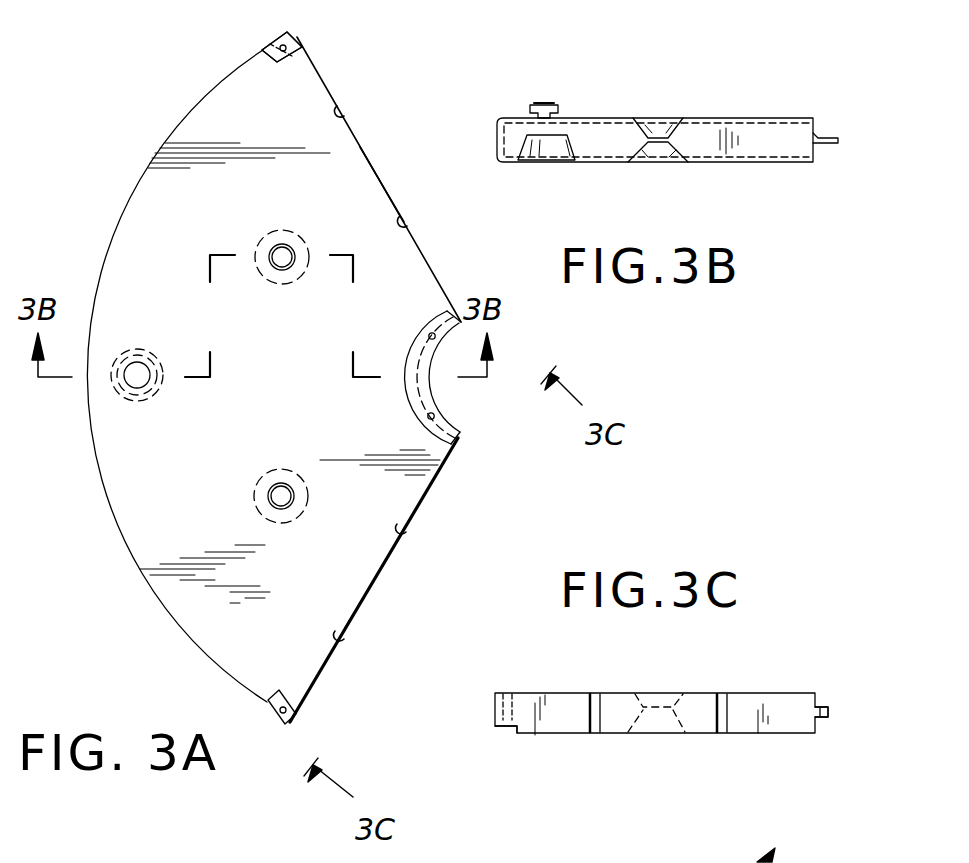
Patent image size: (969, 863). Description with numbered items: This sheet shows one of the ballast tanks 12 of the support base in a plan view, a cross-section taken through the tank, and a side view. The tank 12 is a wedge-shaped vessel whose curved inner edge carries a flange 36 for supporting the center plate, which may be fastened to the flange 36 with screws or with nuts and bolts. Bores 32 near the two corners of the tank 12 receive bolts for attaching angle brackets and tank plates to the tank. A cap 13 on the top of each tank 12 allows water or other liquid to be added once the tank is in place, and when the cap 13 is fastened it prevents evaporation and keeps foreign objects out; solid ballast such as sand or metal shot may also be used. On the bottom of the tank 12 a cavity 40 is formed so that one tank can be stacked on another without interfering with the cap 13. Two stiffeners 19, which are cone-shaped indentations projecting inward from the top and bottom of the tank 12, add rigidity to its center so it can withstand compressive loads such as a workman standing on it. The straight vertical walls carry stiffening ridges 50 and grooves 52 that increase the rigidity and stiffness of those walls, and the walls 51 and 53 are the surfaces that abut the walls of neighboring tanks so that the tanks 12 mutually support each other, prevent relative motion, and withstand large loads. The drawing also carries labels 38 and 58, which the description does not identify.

In FIG. 3A, the tank 12 is at (148, 164).
In FIG. 3B, the tank 12 is at (730, 118).
In FIG. 3C, the tank 12 is at (757, 693).
In FIG. 3A, the cap 13 is at (125, 385).
In FIG. 3B, the cap 13 is at (548, 103).
In FIG. 3A, the stiffener 19 is at (282, 272).
In FIG. 3B, the stiffener 19 is at (658, 118).
In FIG. 3C, the stiffener 19 is at (651, 693).
In FIG. 3A, the bore 32 is at (295, 46).
In FIG. 3C, the bore 32 is at (505, 693).
In FIG. 3A, the flange 36 is at (456, 440).
In FIG. 3B, the flange 36 is at (828, 133).
In FIG. 3C, the flange 36 is at (830, 717).
In FIG. 3A, the hinge pin 38 is at (262, 50).
In FIG. 3C, the hinge pin 38 is at (507, 733).
In FIG. 3A, the cavity 40 is at (283, 718).
In FIG. 3B, the cavity 40 is at (552, 160).
In FIG. 3A, the stiffening ridge 50 is at (344, 114).
In FIG. 3A, the wall 51 is at (382, 184).
In FIG. 3A, the groove 52 is at (406, 528).
In FIG. 3C, the groove 52 is at (594, 733).
In FIG. 3A, the wall 53 is at (376, 598).
In FIG. 3C, the arrow 58 is at (736, 862).